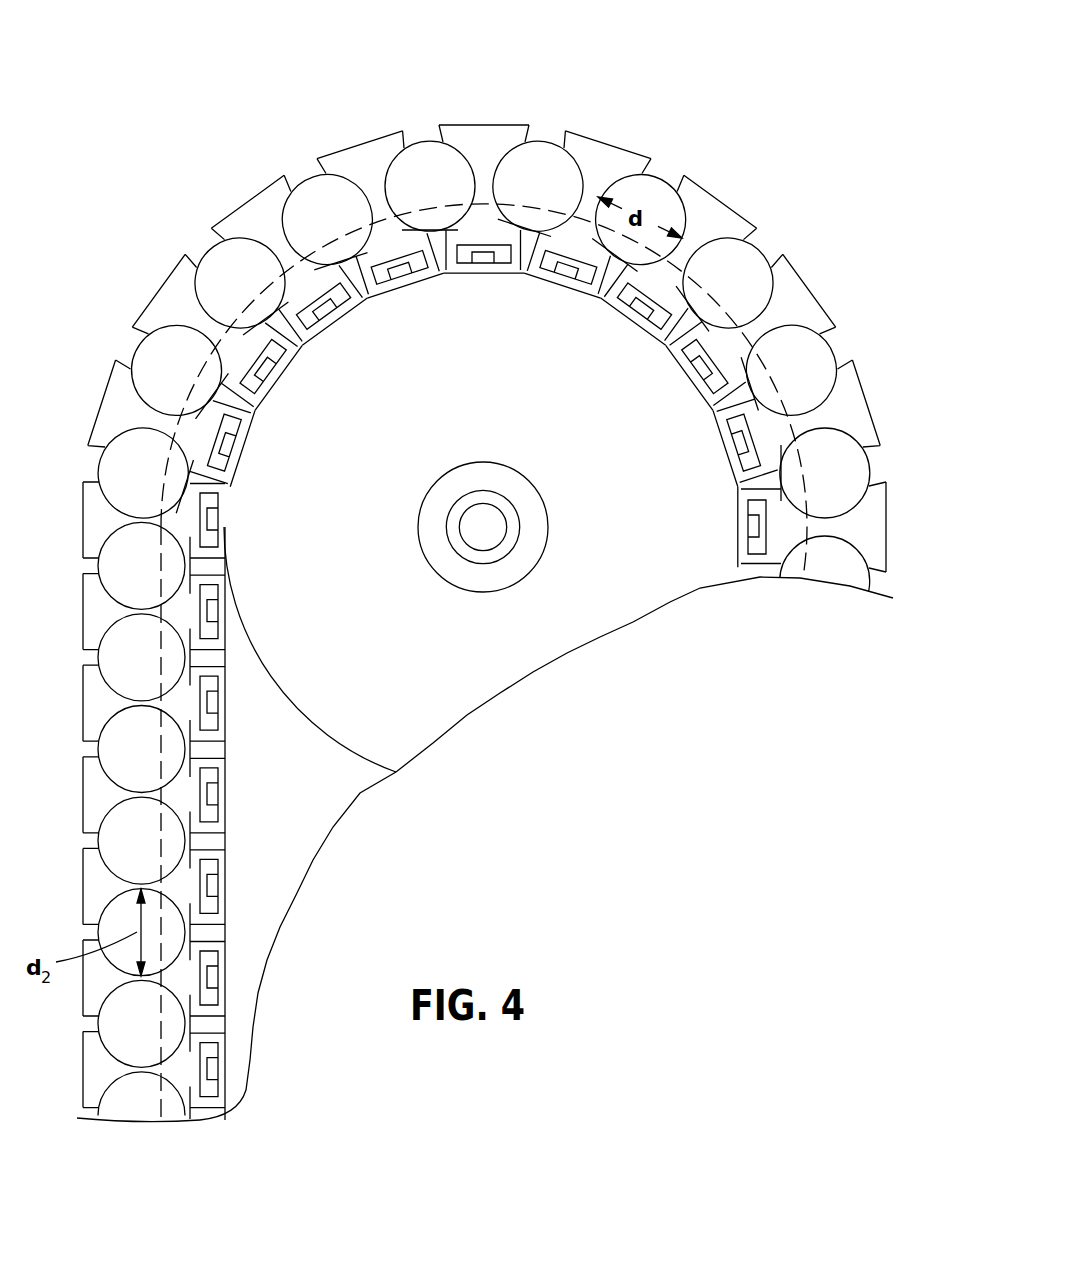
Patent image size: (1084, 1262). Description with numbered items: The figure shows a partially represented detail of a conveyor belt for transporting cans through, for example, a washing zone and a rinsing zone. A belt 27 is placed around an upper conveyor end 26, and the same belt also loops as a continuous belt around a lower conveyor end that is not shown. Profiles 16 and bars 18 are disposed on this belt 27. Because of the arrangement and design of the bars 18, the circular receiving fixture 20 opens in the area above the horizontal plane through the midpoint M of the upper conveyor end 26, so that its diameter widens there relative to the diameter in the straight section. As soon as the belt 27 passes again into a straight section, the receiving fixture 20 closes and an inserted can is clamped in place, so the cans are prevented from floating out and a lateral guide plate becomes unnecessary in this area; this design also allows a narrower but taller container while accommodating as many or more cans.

The profiles 16 is at (226, 860).
The bars 18 is at (90, 795).
The circular receiving fixture 20 is at (668, 170).
The upper conveyor end 26 is at (640, 595).
The belt 27 is at (225, 983).
The midpoint of the upper conveyor end M is at (483, 527).